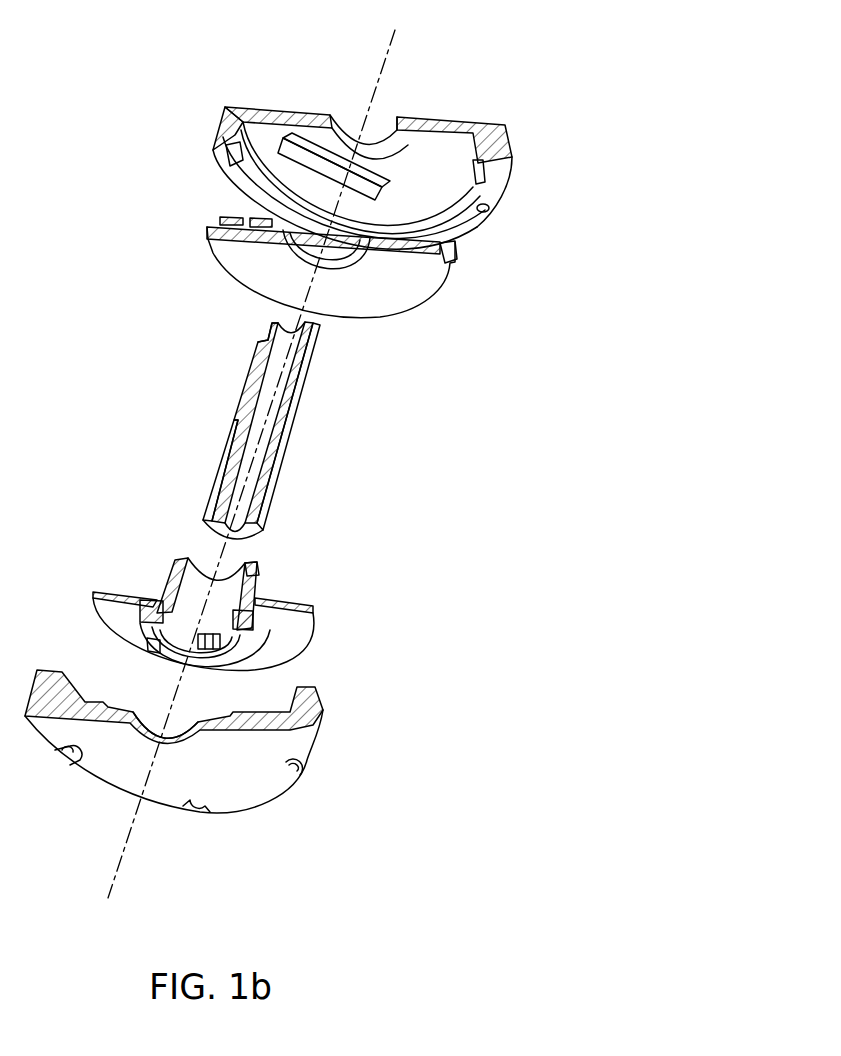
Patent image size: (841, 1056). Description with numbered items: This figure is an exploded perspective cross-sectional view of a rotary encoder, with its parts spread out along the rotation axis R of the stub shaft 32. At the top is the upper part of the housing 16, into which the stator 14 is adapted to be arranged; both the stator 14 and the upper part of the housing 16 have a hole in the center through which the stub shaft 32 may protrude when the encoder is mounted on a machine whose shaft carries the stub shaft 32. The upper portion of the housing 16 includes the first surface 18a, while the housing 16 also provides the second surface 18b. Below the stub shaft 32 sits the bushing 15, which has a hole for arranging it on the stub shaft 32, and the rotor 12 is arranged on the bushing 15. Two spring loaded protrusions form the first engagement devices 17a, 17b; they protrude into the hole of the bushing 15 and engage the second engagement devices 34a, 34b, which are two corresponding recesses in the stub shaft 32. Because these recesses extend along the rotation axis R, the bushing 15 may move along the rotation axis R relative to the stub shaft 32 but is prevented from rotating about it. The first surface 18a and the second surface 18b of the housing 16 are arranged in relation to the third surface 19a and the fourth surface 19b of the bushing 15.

The rotation axis R is at (260, 451).
The housing 16 is at (271, 454).
The stator 14 is at (250, 258).
The first surface 18a is at (404, 147).
The stub shaft 32 is at (249, 430).
The second engagement device 34a is at (218, 470).
The second engagement device 34b is at (282, 474).
The bushing 15 is at (165, 565).
The rotor 12 is at (323, 622).
The first engagement device 17a is at (155, 617).
The first engagement device 17b is at (236, 620).
The third surface 19a is at (258, 562).
The fourth surface 19b is at (155, 646).
The second surface 18b is at (210, 713).